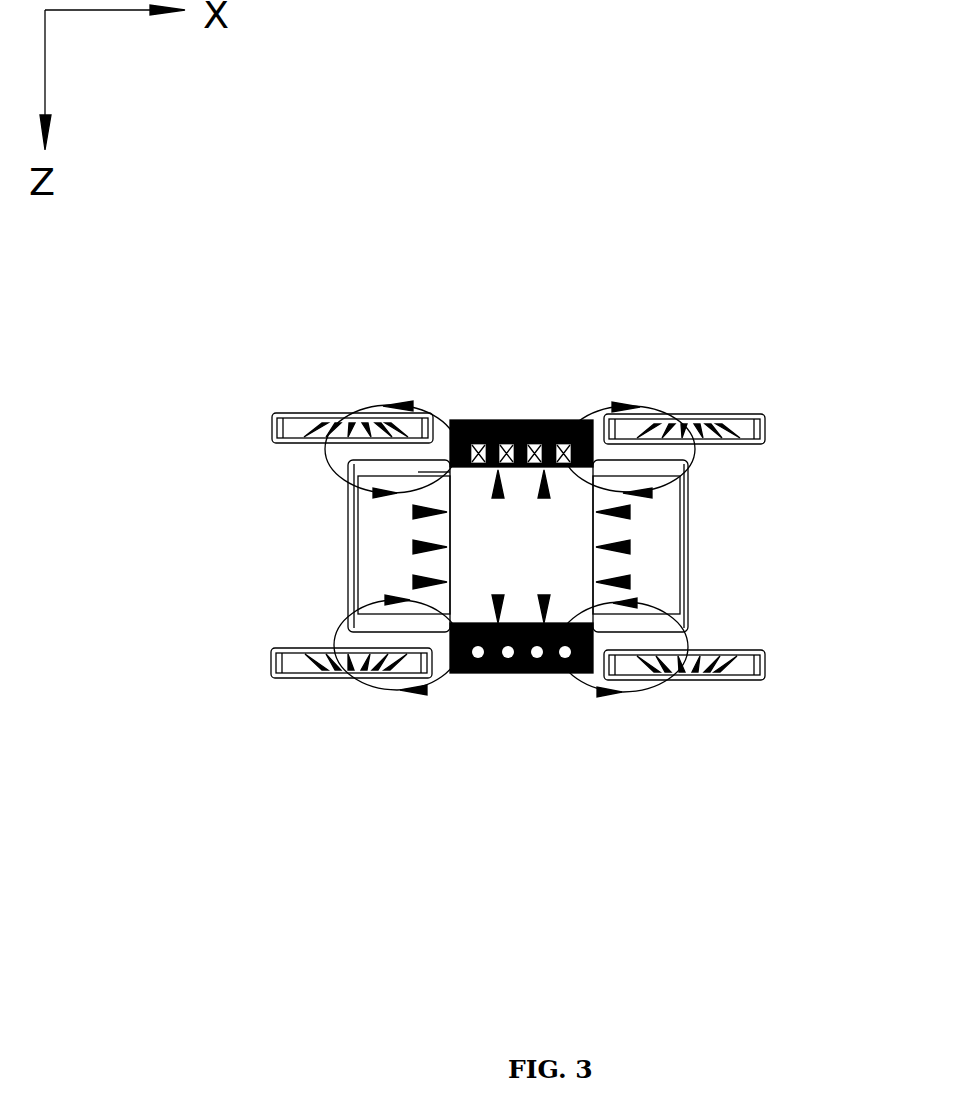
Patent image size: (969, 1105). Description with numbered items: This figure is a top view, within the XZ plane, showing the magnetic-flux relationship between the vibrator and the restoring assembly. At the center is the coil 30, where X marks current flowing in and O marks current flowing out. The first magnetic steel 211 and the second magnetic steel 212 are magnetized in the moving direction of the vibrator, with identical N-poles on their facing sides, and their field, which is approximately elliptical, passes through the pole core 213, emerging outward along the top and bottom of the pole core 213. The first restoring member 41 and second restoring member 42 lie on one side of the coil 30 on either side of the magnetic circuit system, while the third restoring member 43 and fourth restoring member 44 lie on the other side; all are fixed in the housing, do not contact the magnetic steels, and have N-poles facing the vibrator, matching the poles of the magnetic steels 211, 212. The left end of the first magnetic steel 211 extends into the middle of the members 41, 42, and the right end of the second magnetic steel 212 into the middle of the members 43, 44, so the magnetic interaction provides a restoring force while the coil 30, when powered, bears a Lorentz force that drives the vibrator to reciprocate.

The coil 30 is at (517, 420).
The first restoring member 41 is at (325, 665).
The second restoring member 42 is at (325, 440).
The third restoring member 43 is at (720, 662).
The fourth restoring member 44 is at (732, 435).
The first magnetic steel 211 is at (382, 528).
The second magnetic steel 212 is at (658, 547).
The pole core 213 is at (563, 597).